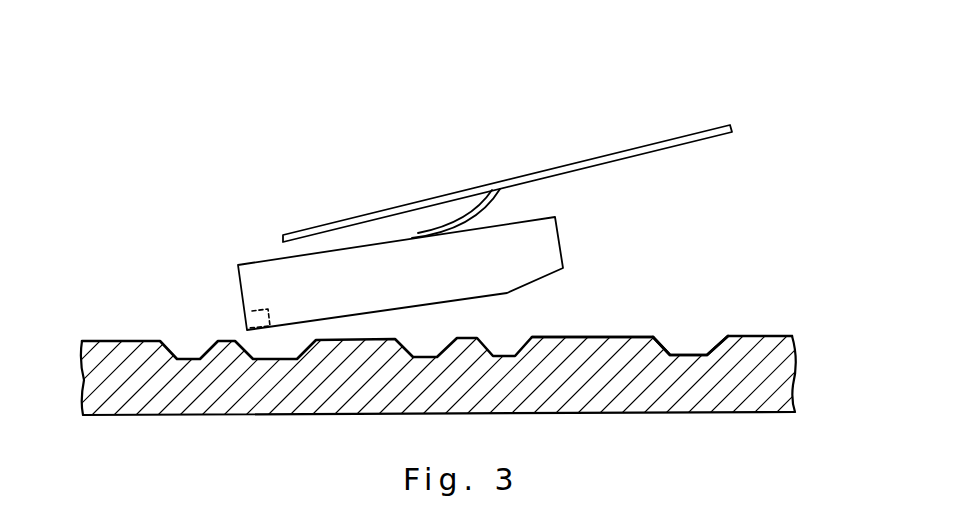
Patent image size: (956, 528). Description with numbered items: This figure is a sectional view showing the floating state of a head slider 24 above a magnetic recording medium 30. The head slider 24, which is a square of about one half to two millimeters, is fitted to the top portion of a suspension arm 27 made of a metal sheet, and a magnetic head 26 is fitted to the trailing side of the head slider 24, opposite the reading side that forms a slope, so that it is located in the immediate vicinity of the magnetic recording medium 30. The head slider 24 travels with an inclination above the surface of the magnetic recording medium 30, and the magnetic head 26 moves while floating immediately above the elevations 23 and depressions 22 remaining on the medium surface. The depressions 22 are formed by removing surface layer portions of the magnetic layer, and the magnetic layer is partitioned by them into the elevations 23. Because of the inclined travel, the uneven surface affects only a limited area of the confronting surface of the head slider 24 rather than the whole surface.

The depressions 22 is at (680, 342).
The elevations 23 is at (605, 335).
The head slider 24 is at (375, 263).
The magnetic head 26 is at (247, 320).
The suspension arm 27 is at (689, 130).
The magnetic recording medium 30 is at (757, 329).